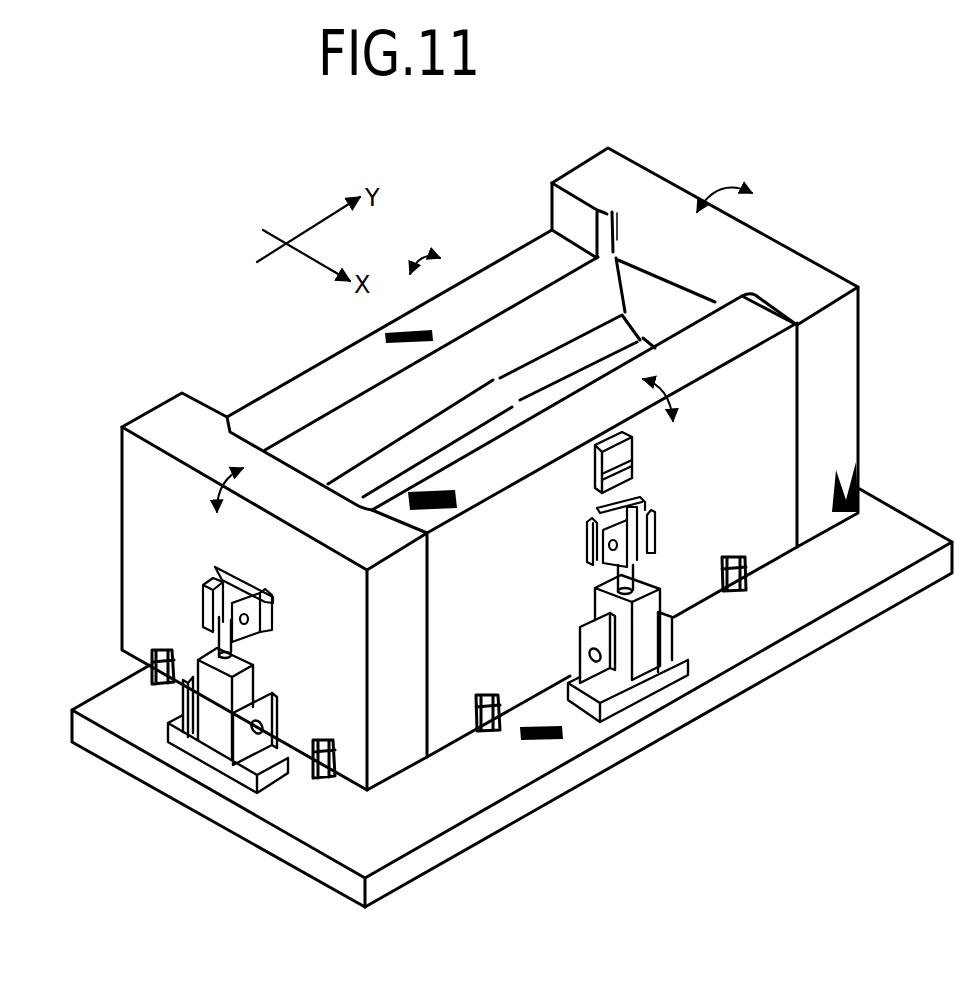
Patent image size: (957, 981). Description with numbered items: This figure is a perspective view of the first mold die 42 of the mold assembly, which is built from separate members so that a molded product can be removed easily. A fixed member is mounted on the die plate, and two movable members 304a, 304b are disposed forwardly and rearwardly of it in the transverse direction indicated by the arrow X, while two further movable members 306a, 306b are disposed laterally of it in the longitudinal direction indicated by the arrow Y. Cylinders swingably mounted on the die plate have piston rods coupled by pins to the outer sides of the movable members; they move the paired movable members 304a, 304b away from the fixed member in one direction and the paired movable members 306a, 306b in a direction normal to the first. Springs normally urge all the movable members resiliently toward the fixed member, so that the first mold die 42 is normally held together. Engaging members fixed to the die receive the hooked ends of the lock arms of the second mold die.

The first mold die 42 is at (194, 334).
The movable member 304a is at (296, 404).
The movable member 304b is at (755, 465).
The movable member 306a is at (157, 532).
The movable member 306b is at (837, 358).